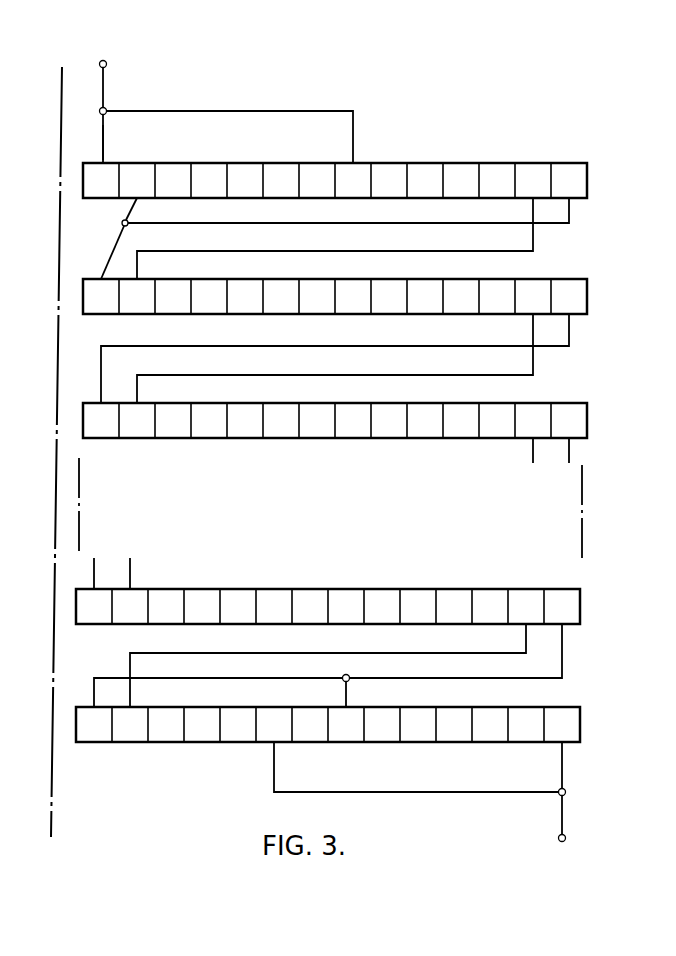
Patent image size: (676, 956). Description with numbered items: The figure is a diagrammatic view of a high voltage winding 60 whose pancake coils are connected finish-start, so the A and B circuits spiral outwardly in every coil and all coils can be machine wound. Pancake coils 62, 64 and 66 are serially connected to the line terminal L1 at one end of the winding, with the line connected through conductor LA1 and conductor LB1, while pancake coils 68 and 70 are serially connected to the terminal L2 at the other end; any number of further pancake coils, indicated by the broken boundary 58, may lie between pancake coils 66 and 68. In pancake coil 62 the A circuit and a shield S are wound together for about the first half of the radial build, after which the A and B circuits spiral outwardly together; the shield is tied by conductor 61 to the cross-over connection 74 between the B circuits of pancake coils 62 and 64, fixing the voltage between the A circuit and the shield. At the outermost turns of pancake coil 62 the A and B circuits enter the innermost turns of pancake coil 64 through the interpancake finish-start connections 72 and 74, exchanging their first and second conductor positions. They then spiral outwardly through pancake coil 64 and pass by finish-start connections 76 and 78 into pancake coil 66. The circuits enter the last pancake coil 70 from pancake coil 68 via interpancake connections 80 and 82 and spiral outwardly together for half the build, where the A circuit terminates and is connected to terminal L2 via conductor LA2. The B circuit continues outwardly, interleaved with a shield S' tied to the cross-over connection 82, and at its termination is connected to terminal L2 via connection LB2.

The boundary line of translator 58 is at (62, 78).
The high voltage winding 60 is at (358, 102).
The conductor 61 is at (126, 212).
The pancake coil 62 is at (627, 194).
The pancake coil 64 is at (627, 310).
The pancake coil 66 is at (627, 434).
The pancake coil 68 is at (627, 620).
The pancake coil 70 is at (627, 738).
The interpancake finish-start connection 72 is at (522, 254).
The cross-over connection 74 is at (546, 226).
The interpancake finish-start connection 76 is at (546, 349).
The interpancake finish-start connection 78 is at (522, 378).
The interpancake connection 80 is at (508, 656).
The cross-over connection 82 is at (548, 681).
The line terminal L1 is at (100, 64).
The line LA1 is at (102, 143).
The line LB1 is at (194, 111).
The connection LB2 is at (564, 777).
The conductor LA2 is at (322, 792).
The terminal L2 is at (564, 836).